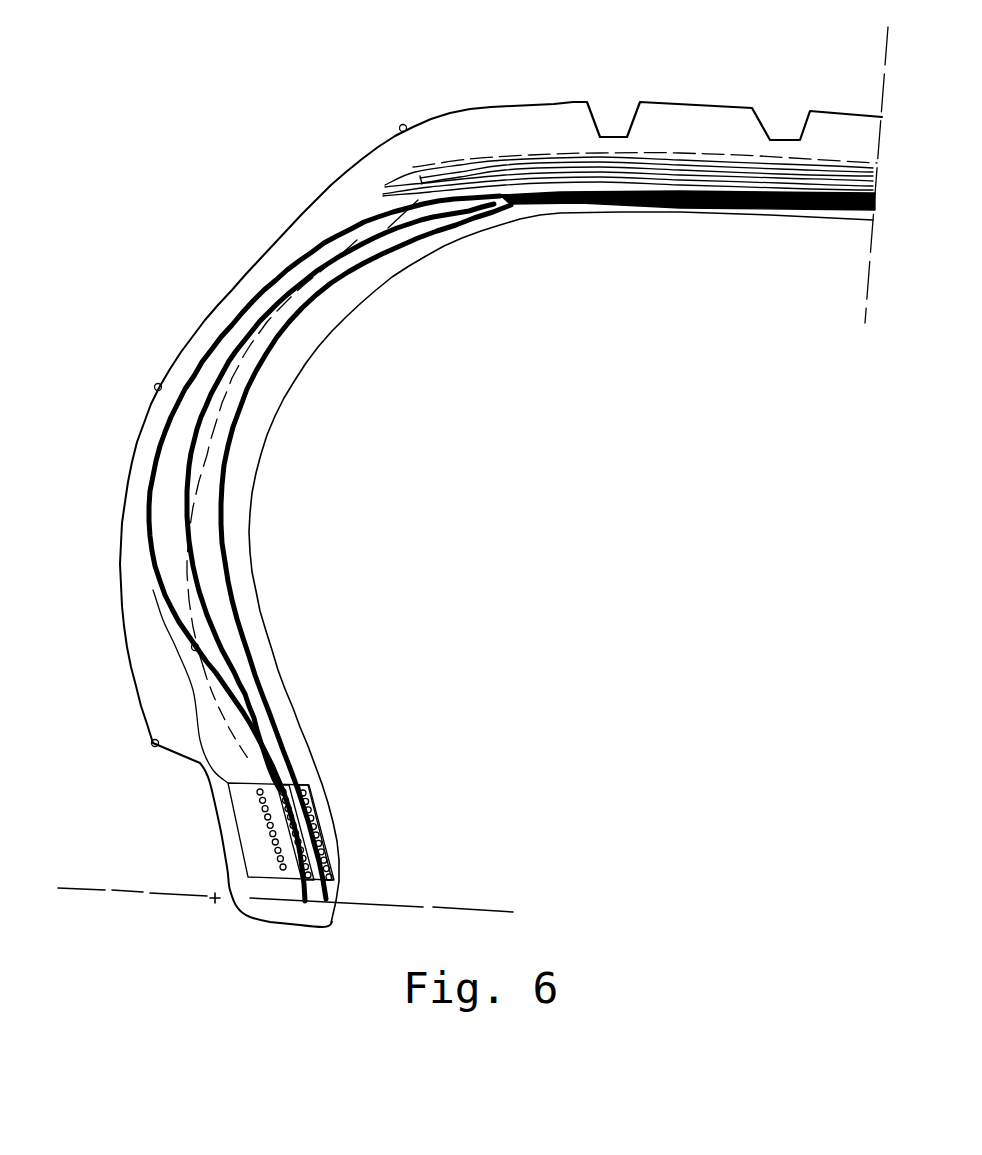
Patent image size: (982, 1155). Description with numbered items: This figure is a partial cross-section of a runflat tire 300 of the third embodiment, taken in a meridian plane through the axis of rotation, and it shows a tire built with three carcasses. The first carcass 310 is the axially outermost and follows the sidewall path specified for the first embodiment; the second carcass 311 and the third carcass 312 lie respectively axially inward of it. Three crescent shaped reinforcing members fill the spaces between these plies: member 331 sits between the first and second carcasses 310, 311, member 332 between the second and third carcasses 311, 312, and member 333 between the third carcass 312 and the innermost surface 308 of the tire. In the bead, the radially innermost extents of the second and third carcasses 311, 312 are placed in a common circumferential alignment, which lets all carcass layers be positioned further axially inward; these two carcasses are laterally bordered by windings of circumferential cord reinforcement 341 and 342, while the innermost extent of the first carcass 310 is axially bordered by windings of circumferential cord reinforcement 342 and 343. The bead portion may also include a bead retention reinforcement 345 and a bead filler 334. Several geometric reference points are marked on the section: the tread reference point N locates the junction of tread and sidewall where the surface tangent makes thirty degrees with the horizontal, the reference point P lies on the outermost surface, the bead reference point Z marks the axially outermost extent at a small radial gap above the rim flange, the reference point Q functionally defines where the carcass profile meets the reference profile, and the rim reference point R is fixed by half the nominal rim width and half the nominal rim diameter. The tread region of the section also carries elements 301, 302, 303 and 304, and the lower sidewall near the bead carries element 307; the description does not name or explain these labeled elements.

The tire 300 is at (590, 505).
The tread 301 is at (727, 140).
The belt layer 302 is at (503, 157).
The belt layer 303 is at (557, 163).
The belt layer 304 is at (637, 173).
The bead portion 307 is at (187, 757).
The innermost surface 308 is at (274, 423).
The first carcass 310 is at (225, 318).
The second carcass 311 is at (190, 533).
The third carcass 312 is at (226, 578).
The crescent shaped reinforcing member 331 is at (270, 307).
The crescent shaped reinforcing member 332 is at (270, 340).
The crescent shaped reinforcing member 333 is at (373, 275).
The bead filler 334 is at (237, 732).
The circumferential cord reinforcement 341 is at (312, 807).
The circumferential cord reinforcement 342 is at (289, 872).
The circumferential cord reinforcement 343 is at (272, 830).
The bead retention reinforcement 345 is at (262, 878).
The tread reference point N is at (400, 126).
The reference point P is at (155, 387).
The reference point Q is at (198, 645).
The bead reference point Z is at (153, 746).
The rim reference point R is at (212, 900).